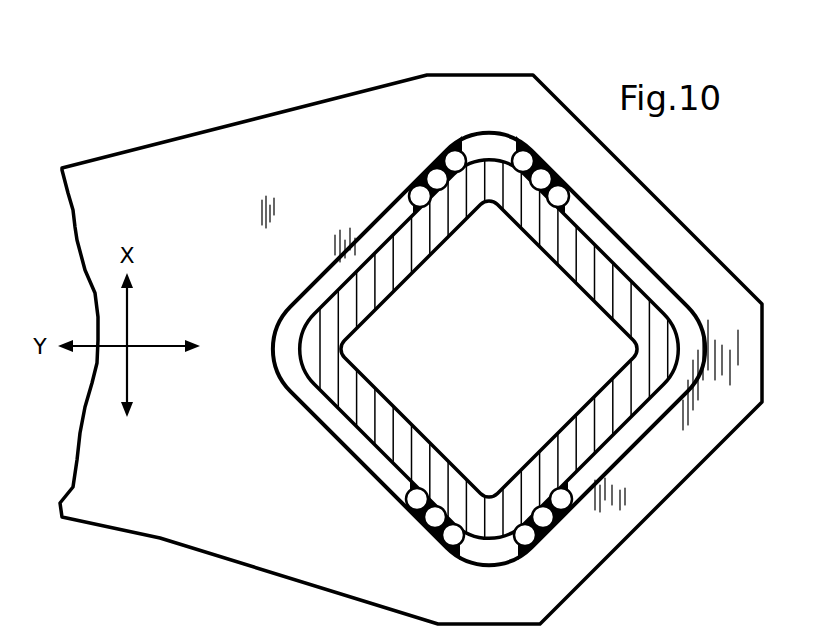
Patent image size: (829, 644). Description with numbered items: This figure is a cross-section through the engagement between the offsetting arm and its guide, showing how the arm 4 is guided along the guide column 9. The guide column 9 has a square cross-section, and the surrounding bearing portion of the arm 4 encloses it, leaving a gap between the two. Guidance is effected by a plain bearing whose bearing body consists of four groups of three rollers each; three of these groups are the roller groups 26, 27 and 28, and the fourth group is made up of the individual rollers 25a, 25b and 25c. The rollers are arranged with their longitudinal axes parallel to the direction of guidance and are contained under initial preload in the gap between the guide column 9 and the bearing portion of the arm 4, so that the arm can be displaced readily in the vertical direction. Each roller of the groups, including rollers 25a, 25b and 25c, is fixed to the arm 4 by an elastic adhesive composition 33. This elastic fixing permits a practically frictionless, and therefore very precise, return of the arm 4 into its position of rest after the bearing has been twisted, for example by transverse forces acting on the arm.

The offsetting arm 4 is at (183, 160).
The guide column 9 is at (605, 282).
The roller group 26 is at (555, 535).
The roller group 27 is at (420, 163).
The roller group 28 is at (552, 163).
The roller 25a is at (412, 504).
The roller 25b is at (432, 521).
The roller 25c is at (455, 545).
The elastic adhesive composition 33 is at (432, 532).